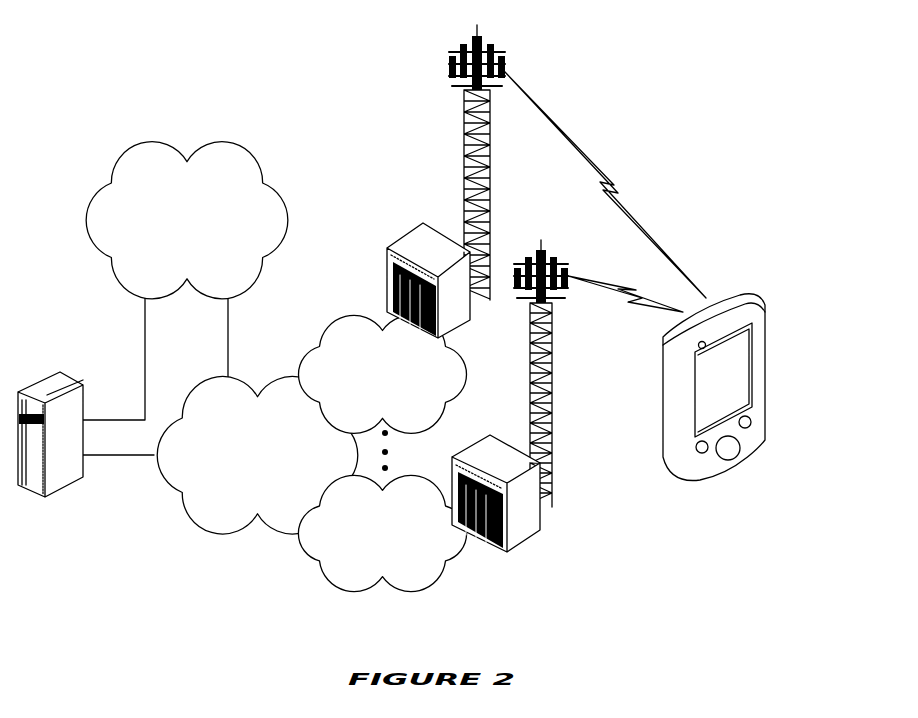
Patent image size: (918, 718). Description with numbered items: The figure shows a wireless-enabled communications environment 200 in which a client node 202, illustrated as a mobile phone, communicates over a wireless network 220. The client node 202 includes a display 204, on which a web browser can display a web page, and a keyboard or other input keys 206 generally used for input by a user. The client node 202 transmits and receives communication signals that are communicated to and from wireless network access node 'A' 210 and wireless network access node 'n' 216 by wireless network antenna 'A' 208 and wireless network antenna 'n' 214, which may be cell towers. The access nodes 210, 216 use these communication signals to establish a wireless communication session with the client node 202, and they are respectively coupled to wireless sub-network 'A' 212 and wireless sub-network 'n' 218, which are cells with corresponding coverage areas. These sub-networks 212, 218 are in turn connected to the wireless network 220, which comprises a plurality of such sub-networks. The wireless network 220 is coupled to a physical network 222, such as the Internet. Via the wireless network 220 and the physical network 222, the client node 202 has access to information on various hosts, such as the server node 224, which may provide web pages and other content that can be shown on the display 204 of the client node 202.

The network environment 200 is at (228, 112).
The client node 202 is at (752, 420).
The display 204 is at (738, 363).
The input keys 206 is at (768, 368).
The wireless network antenna 'A' 208 is at (553, 460).
The wireless network access node 'A' 210 is at (510, 553).
The wireless sub-network 'A' 212 is at (382, 533).
The wireless network antenna 'n' 214 is at (460, 137).
The wireless network access node 'n' 216 is at (417, 230).
The wireless sub-network 'n' 218 is at (382, 374).
The wireless network 220 is at (257, 455).
The physical network 222 is at (187, 220).
The server node 224 is at (50, 493).